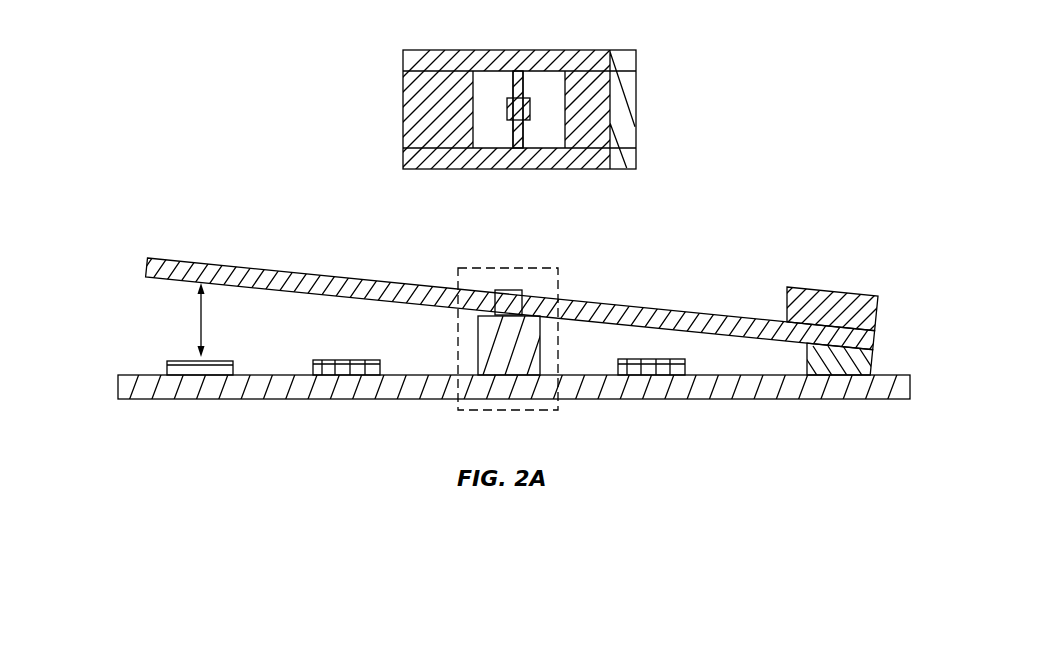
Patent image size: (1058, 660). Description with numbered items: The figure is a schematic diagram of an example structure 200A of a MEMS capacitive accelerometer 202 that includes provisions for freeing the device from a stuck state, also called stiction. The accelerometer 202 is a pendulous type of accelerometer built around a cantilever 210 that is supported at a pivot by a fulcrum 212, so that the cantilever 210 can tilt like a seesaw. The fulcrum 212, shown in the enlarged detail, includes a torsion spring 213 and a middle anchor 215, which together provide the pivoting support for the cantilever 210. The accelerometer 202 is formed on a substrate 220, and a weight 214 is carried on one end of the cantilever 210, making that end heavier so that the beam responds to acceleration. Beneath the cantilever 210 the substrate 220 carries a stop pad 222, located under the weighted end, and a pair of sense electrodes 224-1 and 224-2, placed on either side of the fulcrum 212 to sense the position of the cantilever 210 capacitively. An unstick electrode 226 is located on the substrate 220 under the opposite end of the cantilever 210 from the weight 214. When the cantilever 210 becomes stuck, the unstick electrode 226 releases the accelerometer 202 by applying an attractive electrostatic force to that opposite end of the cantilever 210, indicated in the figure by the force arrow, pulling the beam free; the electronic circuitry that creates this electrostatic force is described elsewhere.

The example structure 200A is at (171, 186).
The MEMS capacitive accelerometer 202 is at (886, 266).
The cantilever 210 is at (267, 269).
The fulcrum 212 is at (520, 268).
The torsion spring 213 is at (513, 137).
The middle anchor 215 is at (507, 110).
The weight 214 is at (837, 287).
The substrate 220 is at (118, 390).
The stop pad 222 is at (877, 370).
The first sense electrode 224-1 is at (310, 363).
The second sense electrode 224-2 is at (687, 368).
The unstick electrode 226 is at (163, 371).